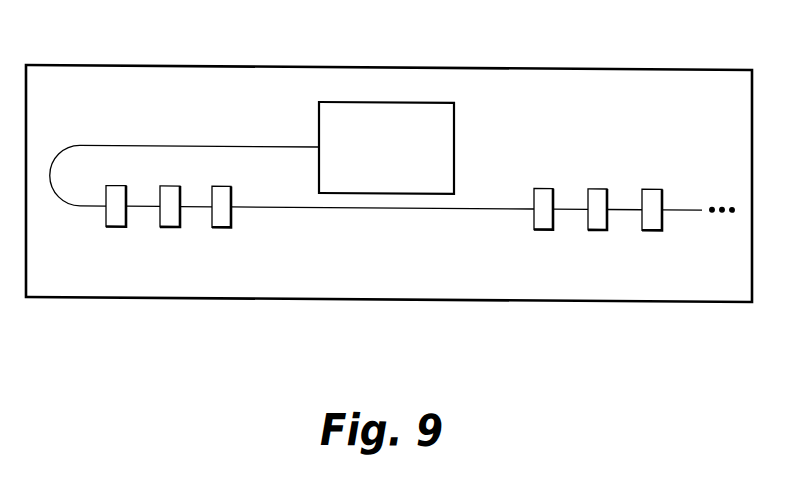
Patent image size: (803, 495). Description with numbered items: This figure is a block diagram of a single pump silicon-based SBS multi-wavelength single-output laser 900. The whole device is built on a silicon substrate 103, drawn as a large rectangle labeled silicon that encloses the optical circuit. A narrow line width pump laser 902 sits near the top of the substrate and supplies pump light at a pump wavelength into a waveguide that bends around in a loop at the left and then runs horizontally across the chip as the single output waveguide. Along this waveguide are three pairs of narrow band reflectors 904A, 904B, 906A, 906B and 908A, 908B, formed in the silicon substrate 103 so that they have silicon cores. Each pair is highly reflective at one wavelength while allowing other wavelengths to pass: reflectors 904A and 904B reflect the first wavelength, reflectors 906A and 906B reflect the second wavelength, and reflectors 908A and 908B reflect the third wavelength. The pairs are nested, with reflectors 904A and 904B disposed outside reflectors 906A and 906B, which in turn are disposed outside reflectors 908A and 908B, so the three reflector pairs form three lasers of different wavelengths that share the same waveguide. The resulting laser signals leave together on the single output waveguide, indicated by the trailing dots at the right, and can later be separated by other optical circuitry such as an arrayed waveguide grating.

The single pump silicon-based SBS multi-wavelength single-output laser 900 is at (238, 56).
The narrow line width pump laser 902 is at (454, 122).
The narrow band reflector 904A is at (110, 226).
The narrow band reflector 906A is at (165, 226).
The narrow band reflector 908A is at (222, 226).
The narrow band reflector 908B is at (541, 226).
The narrow band reflector 906B is at (594, 226).
The narrow band reflector 904B is at (650, 226).
The silicon substrate 103 is at (402, 282).